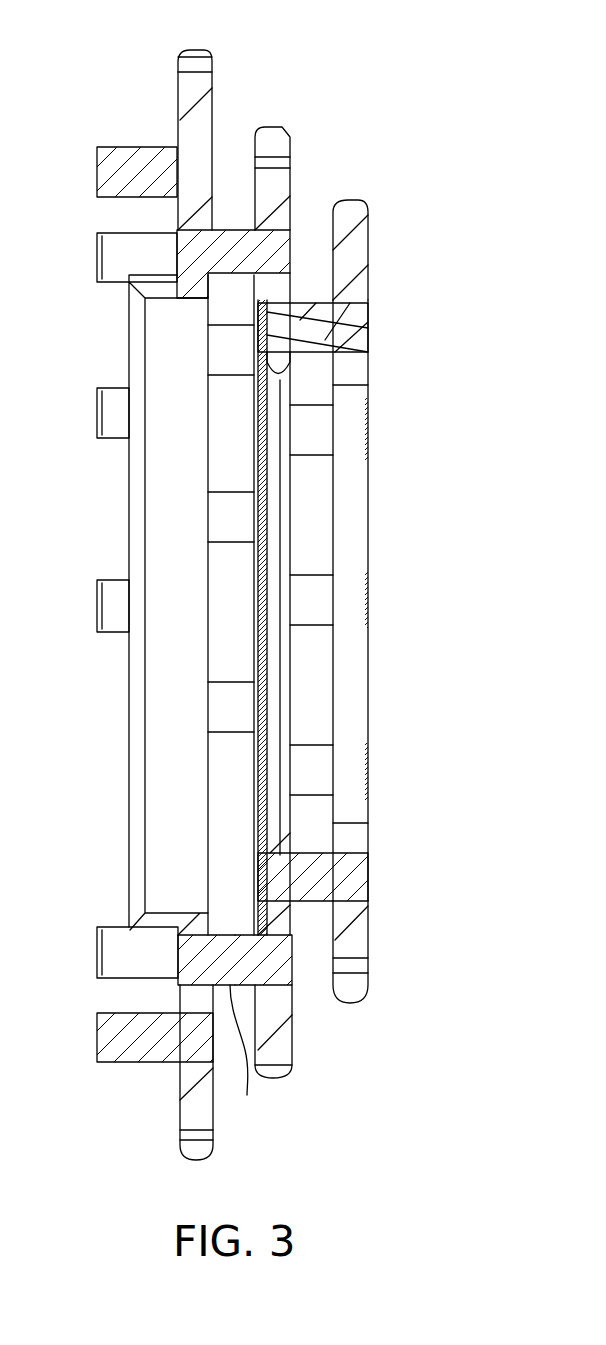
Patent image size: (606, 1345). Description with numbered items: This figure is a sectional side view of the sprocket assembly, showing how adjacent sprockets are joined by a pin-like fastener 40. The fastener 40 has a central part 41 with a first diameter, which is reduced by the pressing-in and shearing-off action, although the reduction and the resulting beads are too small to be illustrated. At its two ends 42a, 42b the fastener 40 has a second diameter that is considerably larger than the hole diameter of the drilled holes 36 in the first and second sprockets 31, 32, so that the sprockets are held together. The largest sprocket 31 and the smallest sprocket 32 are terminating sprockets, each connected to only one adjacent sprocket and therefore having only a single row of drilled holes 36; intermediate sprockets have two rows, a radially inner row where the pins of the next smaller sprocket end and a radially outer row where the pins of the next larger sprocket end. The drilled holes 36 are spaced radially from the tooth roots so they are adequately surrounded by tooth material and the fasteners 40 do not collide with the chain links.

The first sprocket 31 is at (202, 48).
The second sprocket 32 is at (282, 126).
The drilled holes 36 is at (263, 231).
The fastener 40 is at (343, 870).
The central part 41 is at (245, 1055).
The end of the fastener 42a is at (178, 985).
The end of the fastener 42b is at (292, 985).